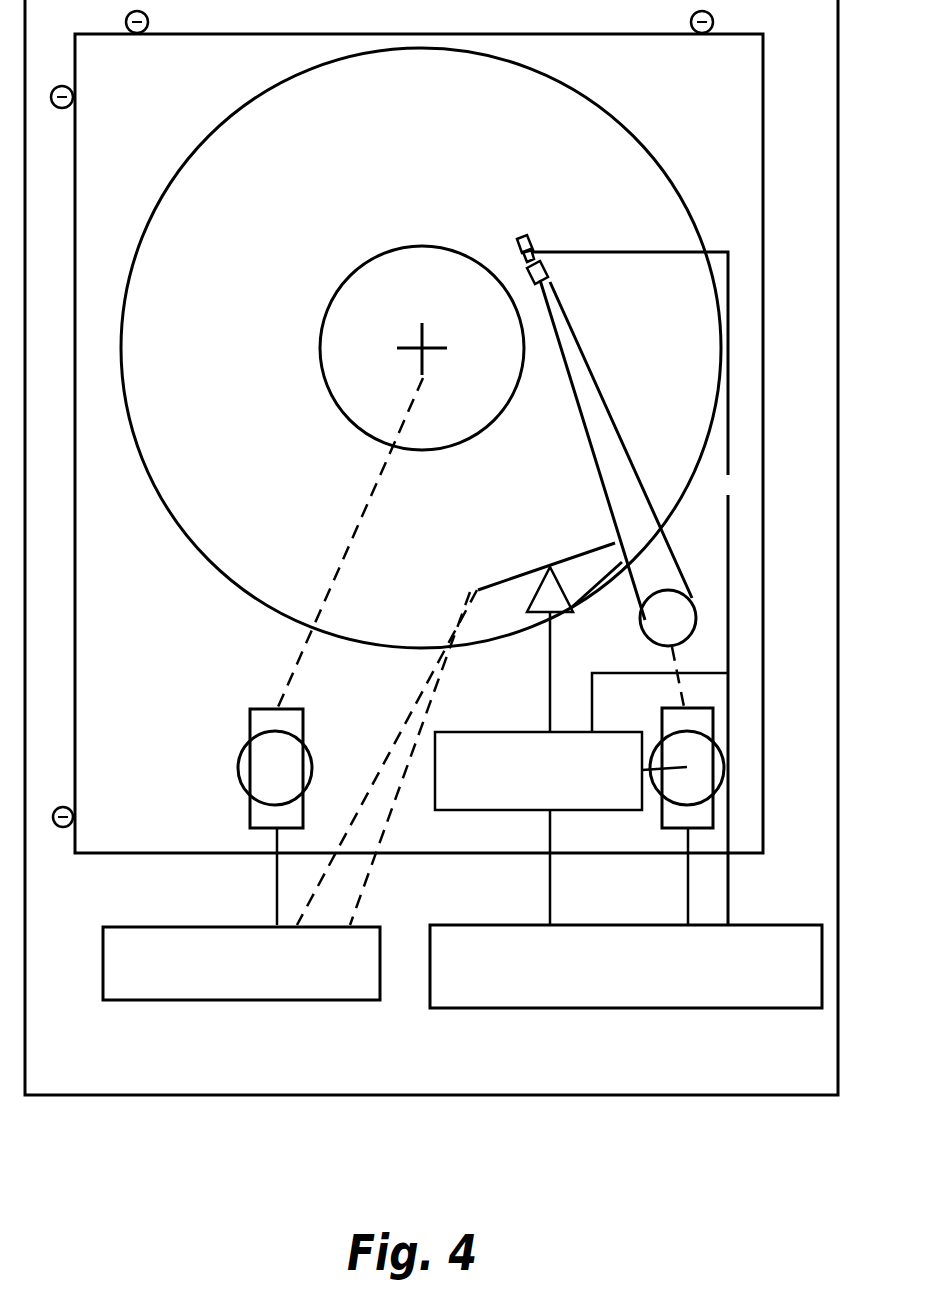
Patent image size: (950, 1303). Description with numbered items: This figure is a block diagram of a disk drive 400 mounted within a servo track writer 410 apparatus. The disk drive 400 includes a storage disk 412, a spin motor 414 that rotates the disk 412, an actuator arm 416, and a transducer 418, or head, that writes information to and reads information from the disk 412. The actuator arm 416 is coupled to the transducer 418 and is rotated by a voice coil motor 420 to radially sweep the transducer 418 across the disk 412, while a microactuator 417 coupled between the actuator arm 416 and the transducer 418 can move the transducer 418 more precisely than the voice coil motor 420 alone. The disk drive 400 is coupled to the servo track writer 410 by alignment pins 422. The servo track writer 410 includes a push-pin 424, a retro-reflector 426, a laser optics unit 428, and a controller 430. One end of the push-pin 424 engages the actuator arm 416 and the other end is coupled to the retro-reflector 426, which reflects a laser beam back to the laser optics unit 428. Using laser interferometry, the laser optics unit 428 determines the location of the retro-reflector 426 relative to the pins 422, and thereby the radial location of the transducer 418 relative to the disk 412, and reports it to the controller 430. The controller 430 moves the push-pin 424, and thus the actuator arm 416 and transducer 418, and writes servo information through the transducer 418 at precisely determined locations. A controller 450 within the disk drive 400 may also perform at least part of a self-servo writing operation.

The disk drive 400 is at (222, 855).
The servo track writer 410 is at (696, 1097).
The storage disk 412 is at (636, 172).
The spin motor 414 is at (268, 767).
The actuator arm 416 is at (609, 462).
The microactuator 417 is at (547, 279).
The transducer 418 is at (523, 233).
The voice coil motor 420 is at (663, 826).
The alignment pins 422 is at (146, 16).
The push-pin 424 is at (597, 548).
The retro-reflector 426 is at (494, 601).
The laser optics unit 428 is at (268, 1002).
The controller 430 is at (765, 1010).
The controller 450 is at (506, 812).